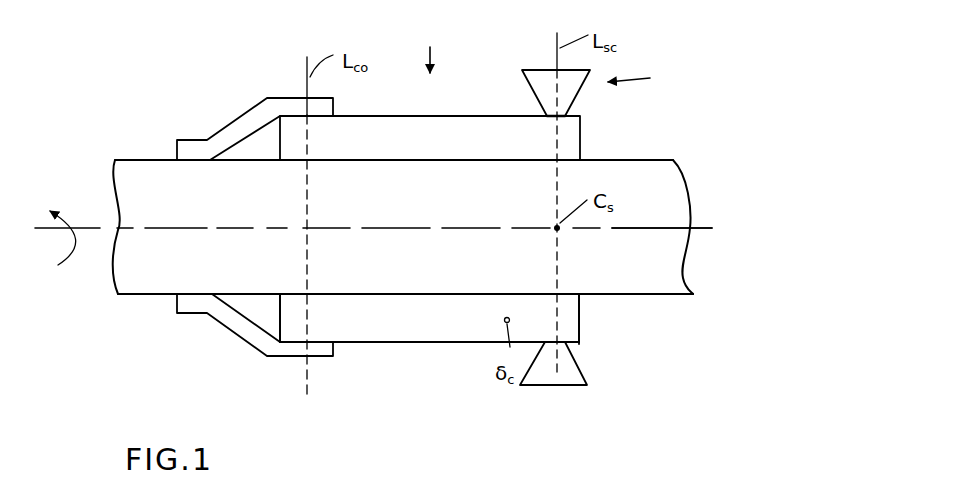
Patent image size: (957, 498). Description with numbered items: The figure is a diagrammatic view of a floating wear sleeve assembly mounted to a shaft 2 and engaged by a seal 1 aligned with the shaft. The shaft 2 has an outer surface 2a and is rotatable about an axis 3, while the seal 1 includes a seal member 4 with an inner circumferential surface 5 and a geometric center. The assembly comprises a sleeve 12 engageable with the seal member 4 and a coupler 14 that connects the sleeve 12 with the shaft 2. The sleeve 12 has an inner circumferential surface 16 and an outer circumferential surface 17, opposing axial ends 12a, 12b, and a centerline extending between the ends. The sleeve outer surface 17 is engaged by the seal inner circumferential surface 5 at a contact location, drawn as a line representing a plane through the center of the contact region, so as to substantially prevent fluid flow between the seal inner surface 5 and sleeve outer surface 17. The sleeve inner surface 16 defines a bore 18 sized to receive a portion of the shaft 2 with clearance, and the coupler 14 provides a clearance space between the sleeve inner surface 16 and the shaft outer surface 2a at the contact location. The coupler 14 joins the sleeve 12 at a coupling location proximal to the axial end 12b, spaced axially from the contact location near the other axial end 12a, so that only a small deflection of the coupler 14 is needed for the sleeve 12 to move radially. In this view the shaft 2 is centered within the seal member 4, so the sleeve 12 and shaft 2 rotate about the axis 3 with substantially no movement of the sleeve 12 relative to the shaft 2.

The seal 1 is at (641, 75).
The shaft 2 is at (678, 190).
The outer surface 2a is at (680, 296).
The axis 3 is at (702, 225).
The seal member 4 is at (537, 82).
The inner circumferential surface 5 is at (558, 120).
The sleeve 12 is at (435, 42).
The axial end 12a is at (582, 323).
The axial end 12b is at (278, 310).
The coupler 14 is at (212, 87).
The inner circumferential surface 16 is at (391, 337).
The outer circumferential surface 17 is at (435, 343).
The bore 18 is at (444, 125).